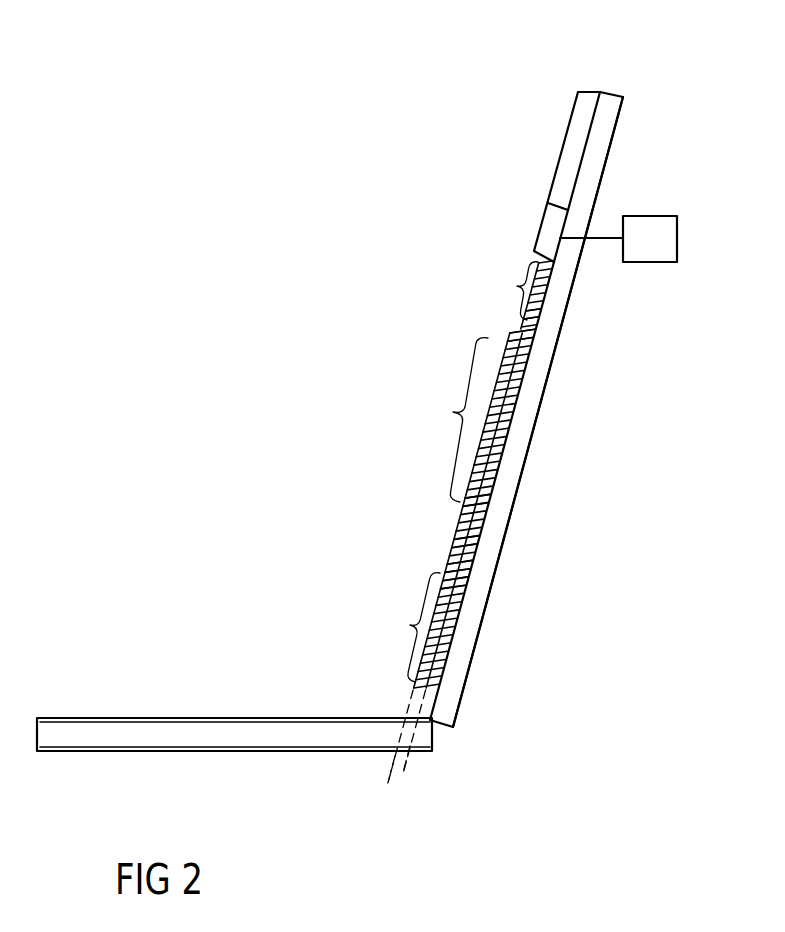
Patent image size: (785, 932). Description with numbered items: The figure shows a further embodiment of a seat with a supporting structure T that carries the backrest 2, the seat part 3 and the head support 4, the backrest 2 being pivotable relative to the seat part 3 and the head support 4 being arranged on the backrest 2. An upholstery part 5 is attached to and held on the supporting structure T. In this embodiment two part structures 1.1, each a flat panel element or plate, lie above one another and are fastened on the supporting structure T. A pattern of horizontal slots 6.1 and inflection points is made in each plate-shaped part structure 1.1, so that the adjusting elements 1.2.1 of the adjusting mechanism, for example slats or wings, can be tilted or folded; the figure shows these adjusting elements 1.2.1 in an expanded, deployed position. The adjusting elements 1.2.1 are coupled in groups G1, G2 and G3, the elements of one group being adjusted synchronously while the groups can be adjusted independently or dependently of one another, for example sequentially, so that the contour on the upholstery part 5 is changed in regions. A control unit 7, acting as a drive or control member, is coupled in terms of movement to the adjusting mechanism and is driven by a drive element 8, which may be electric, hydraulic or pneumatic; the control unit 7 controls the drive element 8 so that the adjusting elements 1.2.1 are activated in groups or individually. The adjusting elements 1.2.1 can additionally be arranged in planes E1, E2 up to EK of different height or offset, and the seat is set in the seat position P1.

The backrest 2 is at (514, 455).
The head support 4 is at (582, 106).
The supporting structure T is at (605, 116).
The control unit 7 is at (547, 222).
The drive element 8 is at (663, 251).
The upholstery part 5 is at (503, 320).
The third group of adjusting elements G3 is at (508, 291).
The second group of adjusting elements G2 is at (454, 420).
The first group of adjusting elements G1 is at (410, 627).
The part structure 1.1 is at (540, 316).
The adjusting element 1.2.1 is at (491, 502).
The slot 6.1 is at (452, 570).
The seat part 3 is at (165, 735).
The first plane E1 is at (407, 772).
The second plane E2 is at (392, 778).
The plane Ek EK is at (381, 771).
The seat position P1 is at (283, 327).